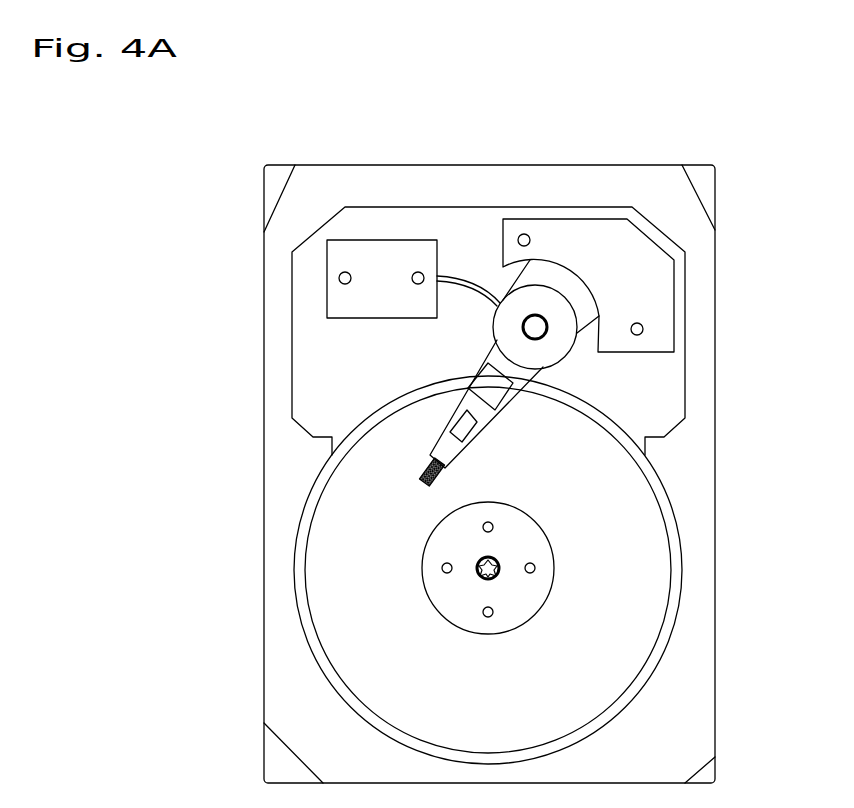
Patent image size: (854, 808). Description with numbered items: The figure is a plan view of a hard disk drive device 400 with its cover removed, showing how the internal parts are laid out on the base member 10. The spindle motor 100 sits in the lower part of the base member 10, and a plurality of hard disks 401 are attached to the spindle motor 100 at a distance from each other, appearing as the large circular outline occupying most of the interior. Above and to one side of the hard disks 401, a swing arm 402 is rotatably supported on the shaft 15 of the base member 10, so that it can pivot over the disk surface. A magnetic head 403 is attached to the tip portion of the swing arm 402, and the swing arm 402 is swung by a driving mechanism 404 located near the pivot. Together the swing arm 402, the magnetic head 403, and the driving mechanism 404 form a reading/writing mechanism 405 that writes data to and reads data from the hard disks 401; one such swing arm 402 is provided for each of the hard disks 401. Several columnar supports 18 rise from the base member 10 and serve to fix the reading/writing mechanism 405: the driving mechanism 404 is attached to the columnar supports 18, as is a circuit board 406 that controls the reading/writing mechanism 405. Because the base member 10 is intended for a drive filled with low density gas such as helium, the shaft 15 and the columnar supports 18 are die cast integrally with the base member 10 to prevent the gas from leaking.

The hard disk drive device 400 is at (731, 205).
The base member 10 is at (715, 456).
The hard disks 401 is at (645, 555).
The spindle motor 100 is at (522, 603).
The reading/writing mechanism 405 is at (168, 275).
The swing arm 402 is at (473, 360).
The magnetic head 403 is at (425, 470).
The driving mechanism 404 is at (608, 240).
The shaft 15 is at (537, 331).
The circuit board 406 is at (413, 255).
The columnar supports 18 is at (411, 274).